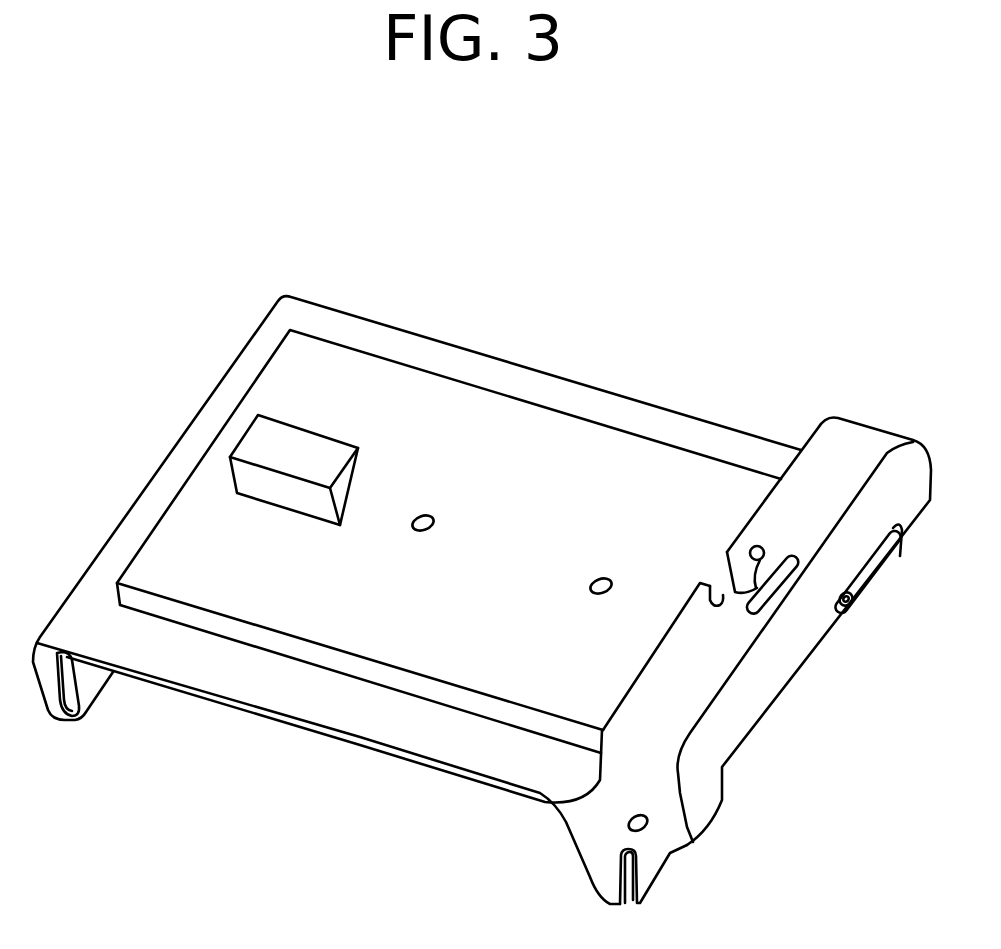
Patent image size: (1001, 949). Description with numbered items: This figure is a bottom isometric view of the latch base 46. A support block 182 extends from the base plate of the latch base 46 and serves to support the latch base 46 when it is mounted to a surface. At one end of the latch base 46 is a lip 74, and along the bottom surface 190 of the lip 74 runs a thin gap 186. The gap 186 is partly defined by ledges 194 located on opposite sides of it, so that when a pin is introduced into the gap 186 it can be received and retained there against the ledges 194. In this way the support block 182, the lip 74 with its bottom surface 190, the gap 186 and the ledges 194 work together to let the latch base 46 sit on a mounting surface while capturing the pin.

The latch base 46 is at (550, 378).
The lip 74 is at (903, 470).
The support block 182 is at (322, 450).
The thin gap 186 is at (723, 582).
The bottom surface 190 is at (711, 683).
The ledges 194 is at (723, 603).